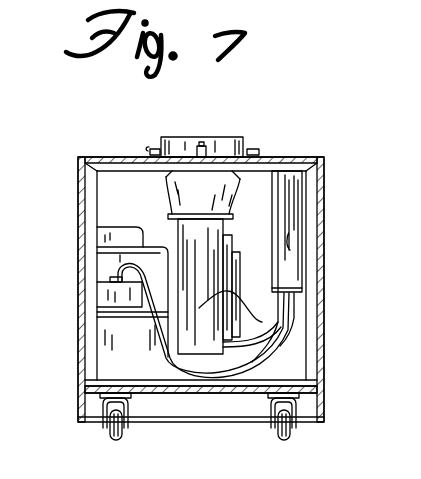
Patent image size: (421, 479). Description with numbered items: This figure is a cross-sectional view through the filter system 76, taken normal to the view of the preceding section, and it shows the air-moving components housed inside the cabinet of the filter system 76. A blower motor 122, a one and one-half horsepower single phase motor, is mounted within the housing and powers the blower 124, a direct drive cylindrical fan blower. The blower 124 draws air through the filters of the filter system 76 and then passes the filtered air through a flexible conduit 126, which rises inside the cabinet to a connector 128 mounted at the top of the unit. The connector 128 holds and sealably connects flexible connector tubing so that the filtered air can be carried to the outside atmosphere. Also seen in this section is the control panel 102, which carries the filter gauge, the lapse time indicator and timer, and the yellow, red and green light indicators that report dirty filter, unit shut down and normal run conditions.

The filter system 76 is at (80, 308).
The control panel 102 is at (290, 228).
The blower motor 122 is at (100, 260).
The blower 124 is at (262, 322).
The flexible conduit 126 is at (166, 178).
The connector 128 is at (218, 148).